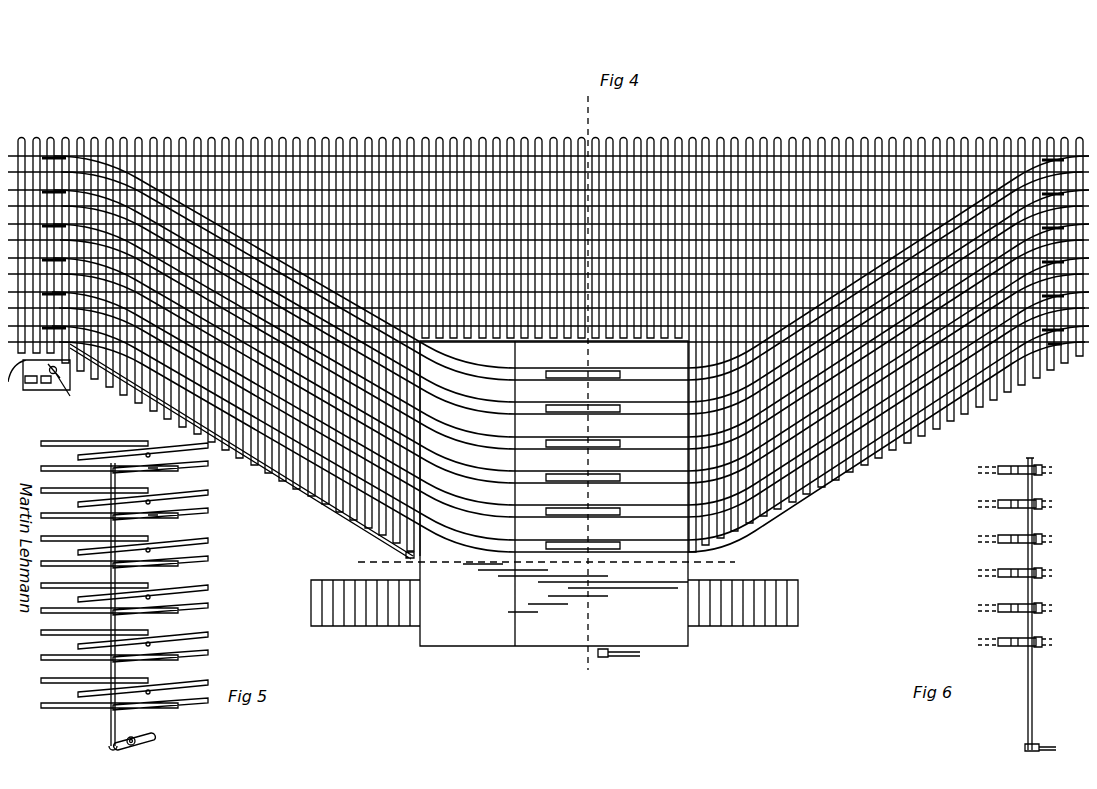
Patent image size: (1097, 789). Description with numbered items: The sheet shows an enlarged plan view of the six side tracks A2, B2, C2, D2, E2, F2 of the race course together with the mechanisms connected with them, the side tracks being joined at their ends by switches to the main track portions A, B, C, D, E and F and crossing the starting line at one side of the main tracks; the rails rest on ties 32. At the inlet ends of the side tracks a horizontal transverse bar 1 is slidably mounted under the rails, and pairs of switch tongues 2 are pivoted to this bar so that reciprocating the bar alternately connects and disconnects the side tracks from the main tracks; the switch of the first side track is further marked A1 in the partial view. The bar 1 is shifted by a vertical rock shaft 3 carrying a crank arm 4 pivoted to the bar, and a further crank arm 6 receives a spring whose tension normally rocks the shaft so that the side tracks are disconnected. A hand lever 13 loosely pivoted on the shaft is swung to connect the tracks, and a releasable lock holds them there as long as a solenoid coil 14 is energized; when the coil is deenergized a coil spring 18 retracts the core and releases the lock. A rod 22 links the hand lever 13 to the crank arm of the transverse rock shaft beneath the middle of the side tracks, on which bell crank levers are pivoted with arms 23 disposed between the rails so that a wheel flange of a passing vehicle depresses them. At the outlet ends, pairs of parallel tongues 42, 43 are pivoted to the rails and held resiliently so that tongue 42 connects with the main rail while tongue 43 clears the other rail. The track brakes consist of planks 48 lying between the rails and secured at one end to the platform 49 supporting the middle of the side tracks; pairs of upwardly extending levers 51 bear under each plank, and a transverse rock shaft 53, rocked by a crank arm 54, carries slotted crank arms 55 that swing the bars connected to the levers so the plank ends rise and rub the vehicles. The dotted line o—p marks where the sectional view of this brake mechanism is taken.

In FIG. 4, the switch tongues 2 is at (46, 149).
In FIG. 5, the switch tongues 2 is at (112, 460).
In FIG. 4, the ties 32 is at (180, 131).
In FIG. 4, the arm 23 is at (412, 420).
In FIG. 4, the planks 48 is at (606, 397).
In FIG. 4, the platform 49 is at (554, 493).
In FIG. 4, the rod 22 is at (300, 498).
In FIG. 4, the tongue 42 is at (1030, 336).
In FIG. 4, the tongue 43 is at (1050, 338).
In FIG. 4, the coil 14 is at (22, 380).
In FIG. 4, the coil spring 18 is at (44, 372).
In FIG. 4, the hand lever 13 is at (60, 384).
In FIG. 4, the rock shaft 53 is at (596, 649).
In FIG. 6, the rock shaft 53 is at (1019, 700).
In FIG. 4, the crank arm 54 is at (626, 648).
In FIG. 6, the crank arm 54 is at (1043, 735).
In FIG. 4, the main track portion A is at (783, 147).
In FIG. 4, the main track portion B is at (721, 183).
In FIG. 4, the main track portion C is at (676, 213).
In FIG. 4, the main track portion D is at (632, 250).
In FIG. 4, the main track portion E is at (596, 260).
In FIG. 4, the main track portion F is at (556, 263).
In FIG. 4, the side track A2 is at (481, 372).
In FIG. 5, the side track A2 is at (62, 436).
In FIG. 4, the side track B2 is at (477, 407).
In FIG. 4, the side track C2 is at (476, 441).
In FIG. 4, the side track D2 is at (476, 475).
In FIG. 4, the side track E2 is at (476, 509).
In FIG. 4, the side track F2 is at (474, 544).
In FIG. 4, the section line o—p o is at (536, 560).
In FIG. 4, the section line o— p is at (667, 390).
In FIG. 5, the transverse bar 1 is at (95, 657).
In FIG. 5, the rock shaft 3 is at (123, 729).
In FIG. 5, the crank arm 4 is at (101, 738).
In FIG. 5, the crank arm 6 is at (140, 735).
In FIG. 5, the switch arm A1 is at (96, 470).
In FIG. 6, the levers 51 is at (1005, 466).
In FIG. 6, the crank arms 55 is at (1031, 467).